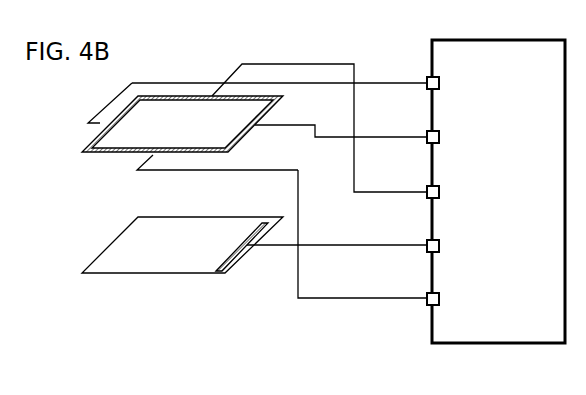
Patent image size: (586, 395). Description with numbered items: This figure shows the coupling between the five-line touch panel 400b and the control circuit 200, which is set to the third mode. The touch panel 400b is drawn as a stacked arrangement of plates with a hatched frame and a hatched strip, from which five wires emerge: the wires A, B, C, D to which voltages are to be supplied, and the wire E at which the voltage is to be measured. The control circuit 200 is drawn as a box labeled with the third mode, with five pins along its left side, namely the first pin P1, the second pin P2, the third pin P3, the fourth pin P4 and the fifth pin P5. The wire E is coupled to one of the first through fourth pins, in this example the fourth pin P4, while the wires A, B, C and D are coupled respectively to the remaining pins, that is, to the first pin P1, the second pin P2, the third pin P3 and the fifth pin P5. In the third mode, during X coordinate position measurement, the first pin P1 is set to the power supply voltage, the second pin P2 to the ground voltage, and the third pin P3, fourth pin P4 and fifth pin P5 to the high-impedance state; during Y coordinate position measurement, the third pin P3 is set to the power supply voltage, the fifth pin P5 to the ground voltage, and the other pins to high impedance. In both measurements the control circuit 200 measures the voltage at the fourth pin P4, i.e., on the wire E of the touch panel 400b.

The wire A is at (184, 82).
The wire B is at (341, 137).
The wire C is at (310, 64).
The wire D is at (319, 300).
The wire E is at (342, 245).
The first pin P1 is at (427, 78).
The second pin P2 is at (427, 133).
The third pin P3 is at (427, 188).
The fourth pin P4 is at (427, 242).
The fifth pin P5 is at (427, 294).
The control circuit 200 is at (505, 344).
The five-line touch panel 400b is at (277, 279).